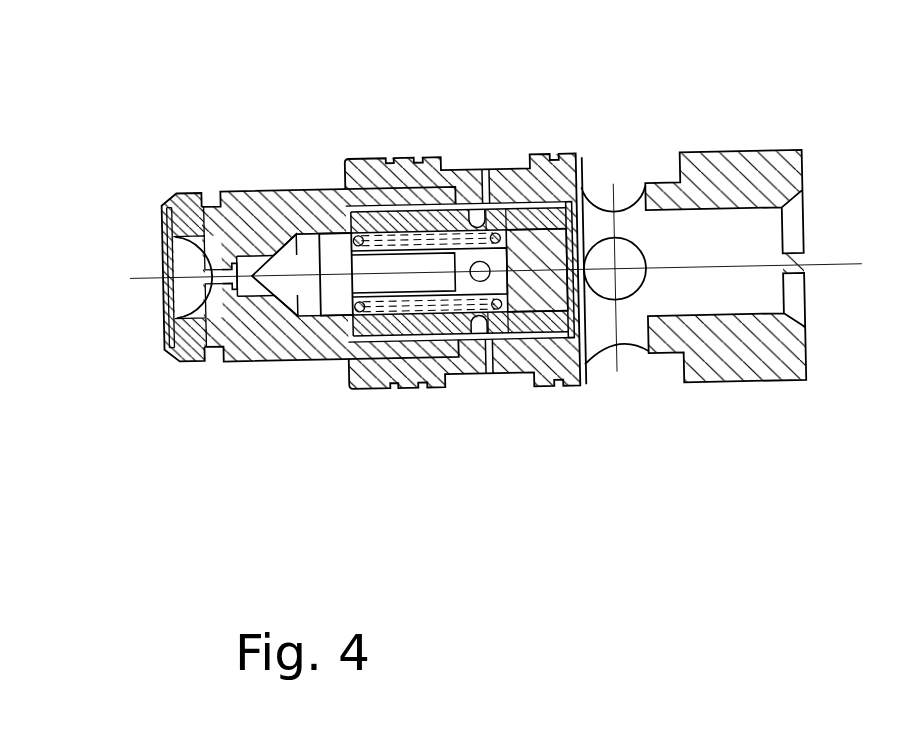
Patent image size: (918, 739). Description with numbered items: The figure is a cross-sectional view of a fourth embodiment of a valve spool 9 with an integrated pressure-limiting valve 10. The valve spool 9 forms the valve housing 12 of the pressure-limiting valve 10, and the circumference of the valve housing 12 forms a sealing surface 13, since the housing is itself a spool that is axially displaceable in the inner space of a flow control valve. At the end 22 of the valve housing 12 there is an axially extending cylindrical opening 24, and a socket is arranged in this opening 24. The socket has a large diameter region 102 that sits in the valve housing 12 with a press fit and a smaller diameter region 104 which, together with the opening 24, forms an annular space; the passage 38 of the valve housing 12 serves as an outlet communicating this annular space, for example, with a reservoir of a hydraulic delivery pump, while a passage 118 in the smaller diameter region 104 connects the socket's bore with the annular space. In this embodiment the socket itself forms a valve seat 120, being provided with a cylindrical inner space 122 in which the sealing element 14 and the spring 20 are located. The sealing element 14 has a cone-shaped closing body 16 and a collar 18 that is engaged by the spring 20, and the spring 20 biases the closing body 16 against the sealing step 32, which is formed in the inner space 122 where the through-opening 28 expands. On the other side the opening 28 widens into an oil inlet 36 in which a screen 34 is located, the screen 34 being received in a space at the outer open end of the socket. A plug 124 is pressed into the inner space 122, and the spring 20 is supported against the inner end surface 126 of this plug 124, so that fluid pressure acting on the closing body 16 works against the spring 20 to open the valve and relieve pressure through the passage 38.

The valve spool 9 is at (770, 147).
The pressure-limiting valve 10 is at (203, 80).
The valve housing 12 is at (715, 168).
The sealing surface 13 is at (370, 155).
The sealing element 14 is at (418, 290).
The cone-shaped closing body 16 is at (315, 300).
The collar 18 is at (336, 365).
The spring 20 is at (510, 320).
The end of the valve housing 22 is at (228, 192).
The cylindrical opening 24 is at (300, 300).
The through-opening 28 is at (197, 362).
The sealing step 32 is at (270, 325).
The screen 34 is at (163, 317).
The oil inlet 36 is at (188, 193).
The passage 38 is at (492, 168).
The large diameter region 102 is at (273, 197).
The smaller diameter region 104 is at (515, 217).
The passage 118 is at (467, 212).
The valve seat 120 is at (222, 345).
The cylindrical inner space 122 is at (392, 320).
The plug 124 is at (580, 200).
The inner end surface 126 is at (532, 215).